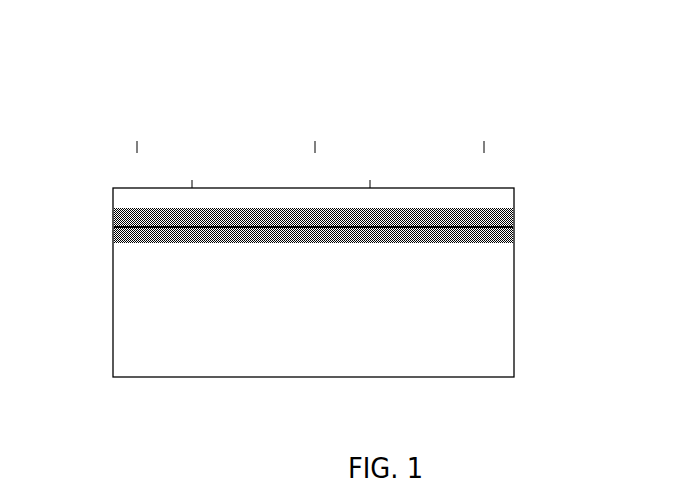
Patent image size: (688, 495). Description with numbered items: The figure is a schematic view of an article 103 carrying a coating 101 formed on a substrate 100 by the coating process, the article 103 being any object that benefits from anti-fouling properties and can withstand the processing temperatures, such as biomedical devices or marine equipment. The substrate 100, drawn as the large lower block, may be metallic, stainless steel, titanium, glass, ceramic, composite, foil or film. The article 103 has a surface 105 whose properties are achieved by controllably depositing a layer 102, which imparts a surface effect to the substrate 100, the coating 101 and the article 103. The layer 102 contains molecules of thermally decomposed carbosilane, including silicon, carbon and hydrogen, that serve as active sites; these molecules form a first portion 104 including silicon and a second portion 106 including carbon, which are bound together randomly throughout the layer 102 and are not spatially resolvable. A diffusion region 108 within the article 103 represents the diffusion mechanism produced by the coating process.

The substrate 100 is at (329, 319).
The coating 101 is at (324, 132).
The layer 102 is at (265, 122).
The article 103 is at (352, 199).
The first portion 104 is at (315, 104).
The surface 105 is at (111, 226).
The second portion 106 is at (380, 136).
The diffusion region 108 is at (298, 226).